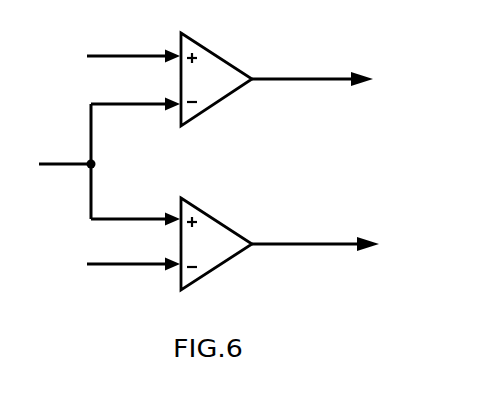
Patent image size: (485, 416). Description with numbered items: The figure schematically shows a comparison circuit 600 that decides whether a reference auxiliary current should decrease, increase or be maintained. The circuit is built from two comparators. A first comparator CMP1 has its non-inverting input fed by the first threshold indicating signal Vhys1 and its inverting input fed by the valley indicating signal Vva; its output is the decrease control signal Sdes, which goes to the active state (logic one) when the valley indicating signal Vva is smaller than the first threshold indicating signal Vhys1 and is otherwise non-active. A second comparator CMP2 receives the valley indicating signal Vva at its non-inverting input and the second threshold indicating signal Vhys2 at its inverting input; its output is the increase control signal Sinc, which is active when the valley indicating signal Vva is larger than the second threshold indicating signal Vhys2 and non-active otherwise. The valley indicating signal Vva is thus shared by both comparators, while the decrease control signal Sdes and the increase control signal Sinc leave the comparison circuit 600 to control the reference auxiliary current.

The comparison circuit 600 is at (323, 35).
The first comparator CMP1 is at (216, 79).
The second comparator CMP2 is at (216, 244).
The first threshold indicating signal Vhys1 is at (133, 47).
The second threshold indicating signal Vhys2 is at (133, 255).
The valley indicating signal Vva is at (107, 162).
The decrease control signal Sdes is at (315, 91).
The increase control signal Sinc is at (315, 233).